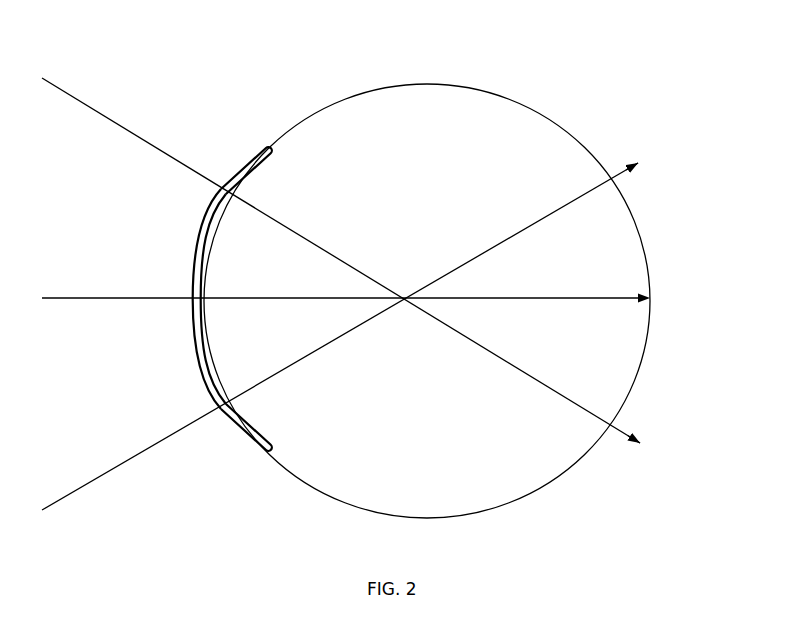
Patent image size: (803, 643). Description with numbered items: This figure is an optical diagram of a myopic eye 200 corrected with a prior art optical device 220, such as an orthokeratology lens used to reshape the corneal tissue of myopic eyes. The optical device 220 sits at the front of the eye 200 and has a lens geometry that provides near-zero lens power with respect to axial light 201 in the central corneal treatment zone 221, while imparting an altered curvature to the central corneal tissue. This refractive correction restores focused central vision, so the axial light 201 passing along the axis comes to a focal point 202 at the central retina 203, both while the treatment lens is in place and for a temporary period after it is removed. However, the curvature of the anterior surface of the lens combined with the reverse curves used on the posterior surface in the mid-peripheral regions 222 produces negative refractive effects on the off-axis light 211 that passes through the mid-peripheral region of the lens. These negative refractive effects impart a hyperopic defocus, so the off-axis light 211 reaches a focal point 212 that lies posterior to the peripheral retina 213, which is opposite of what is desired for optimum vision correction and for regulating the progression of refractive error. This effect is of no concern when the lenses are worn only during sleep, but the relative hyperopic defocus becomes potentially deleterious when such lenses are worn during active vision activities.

The myopic eye 200 is at (270, 48).
The axial light 201 is at (74, 297).
The focal point 202 is at (652, 300).
The central retina 203 is at (654, 295).
The off-axis light 211 is at (97, 111).
The focal point 212 is at (648, 161).
The peripheral retina 213 is at (626, 194).
The prior art optical device 220 is at (194, 278).
The central corneal treatment zone 221 is at (192, 313).
The mid-peripheral regions 222 is at (218, 190).